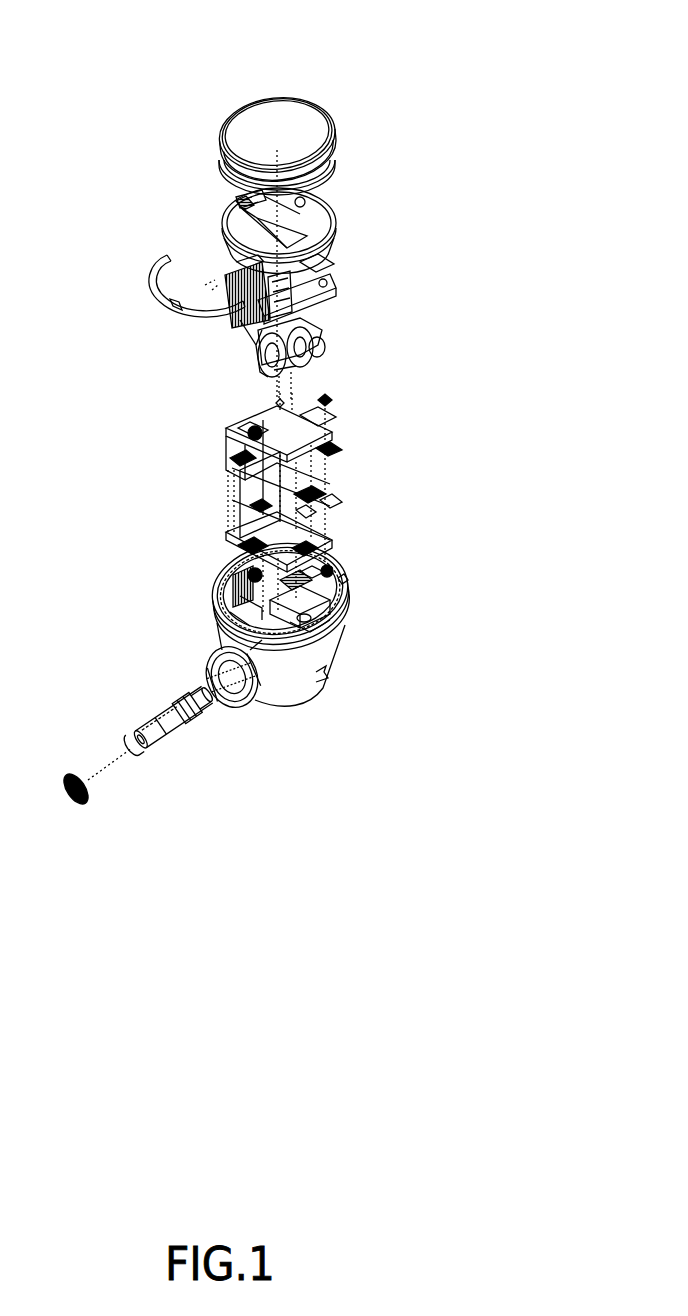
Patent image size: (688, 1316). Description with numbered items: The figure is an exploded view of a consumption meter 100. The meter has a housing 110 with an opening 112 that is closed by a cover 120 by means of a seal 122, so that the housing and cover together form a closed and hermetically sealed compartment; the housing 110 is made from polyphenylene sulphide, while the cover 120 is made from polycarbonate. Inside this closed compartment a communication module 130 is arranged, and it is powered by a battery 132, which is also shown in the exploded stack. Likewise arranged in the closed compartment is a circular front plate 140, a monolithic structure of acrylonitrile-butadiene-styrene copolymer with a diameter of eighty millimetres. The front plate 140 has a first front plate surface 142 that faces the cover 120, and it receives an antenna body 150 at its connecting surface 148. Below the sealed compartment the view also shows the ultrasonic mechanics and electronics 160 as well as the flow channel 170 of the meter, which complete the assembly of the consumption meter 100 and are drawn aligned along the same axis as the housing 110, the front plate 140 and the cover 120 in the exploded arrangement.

The consumption meter 100 is at (212, 82).
The housing 110 is at (218, 622).
The opening 112 is at (335, 572).
The cover 120 is at (335, 127).
The seal 122 is at (338, 178).
The communication module 130 is at (330, 290).
The battery 132 is at (330, 330).
The circular front plate 140 is at (228, 220).
The first front plate surface 142 is at (318, 232).
The connecting surface 148 is at (225, 243).
The antenna body 150 is at (150, 298).
The ultrasonic mechanics and electronics 160 is at (225, 467).
The flow channel 170 is at (157, 720).